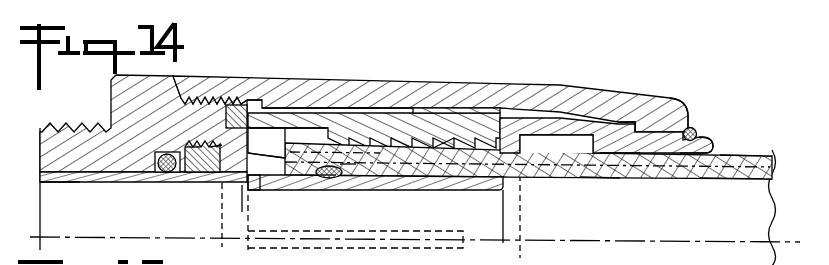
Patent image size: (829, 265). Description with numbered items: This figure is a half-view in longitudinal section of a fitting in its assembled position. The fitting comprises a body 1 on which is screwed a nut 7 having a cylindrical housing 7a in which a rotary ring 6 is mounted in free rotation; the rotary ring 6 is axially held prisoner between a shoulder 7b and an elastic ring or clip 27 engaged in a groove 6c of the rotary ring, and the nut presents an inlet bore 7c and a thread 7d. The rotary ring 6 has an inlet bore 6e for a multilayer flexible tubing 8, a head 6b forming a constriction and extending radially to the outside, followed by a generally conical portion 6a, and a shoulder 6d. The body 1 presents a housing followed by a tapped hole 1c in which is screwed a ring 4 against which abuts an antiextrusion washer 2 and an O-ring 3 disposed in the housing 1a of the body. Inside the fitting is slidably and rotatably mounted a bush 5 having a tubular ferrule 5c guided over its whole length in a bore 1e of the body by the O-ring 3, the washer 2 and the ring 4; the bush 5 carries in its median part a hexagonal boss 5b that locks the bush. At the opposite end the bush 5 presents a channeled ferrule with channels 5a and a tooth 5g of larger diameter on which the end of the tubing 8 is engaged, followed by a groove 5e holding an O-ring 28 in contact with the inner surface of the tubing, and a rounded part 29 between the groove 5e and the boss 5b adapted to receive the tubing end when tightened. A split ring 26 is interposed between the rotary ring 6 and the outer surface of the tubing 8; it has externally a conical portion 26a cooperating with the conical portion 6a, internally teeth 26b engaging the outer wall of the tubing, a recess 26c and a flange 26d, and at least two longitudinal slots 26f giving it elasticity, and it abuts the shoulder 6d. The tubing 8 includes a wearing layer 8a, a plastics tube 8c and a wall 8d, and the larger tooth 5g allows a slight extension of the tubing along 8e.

The body 1 is at (66, 148).
The housing 1a is at (163, 150).
The tapped hole 1c is at (192, 140).
The bore 1e is at (115, 178).
The antiextrusion washer 2 is at (182, 174).
The O-ring 3 is at (167, 174).
The ring 4 is at (222, 140).
The bush 5 is at (290, 143).
The channels 5a is at (445, 178).
The boss 5b is at (238, 128).
The tubular ferrule 5c is at (72, 181).
The groove 5e is at (336, 178).
The tooth 5g is at (342, 168).
The rotary ring 6 is at (498, 130).
The conical portion 6a is at (532, 133).
The head 6b is at (622, 155).
The groove 6c is at (713, 136).
The shoulder 6d is at (593, 154).
The inlet bore 6e is at (692, 158).
The nut 7 is at (563, 97).
The cylindrical housing 7a is at (362, 107).
The shoulder 7b is at (633, 120).
The inlet bore 7c is at (650, 112).
The nut thread 7d is at (259, 96).
The multilayer flexible tubing 8 is at (757, 157).
The wearing layer 8a is at (738, 153).
The plastics tube 8c is at (735, 180).
The hose wall 8d is at (597, 180).
The extension zone of the tubing 8e is at (290, 143).
The split ring 26 is at (467, 127).
The conical portion 26a is at (406, 112).
The teeth 26b is at (440, 140).
The ferrule recess 26c is at (305, 110).
The ferrule flange 26d is at (338, 126).
The longitudinal slot 26f is at (403, 247).
The elastic ring 27 is at (689, 127).
The O-ring 28 is at (327, 178).
The rounded part 29 is at (262, 190).